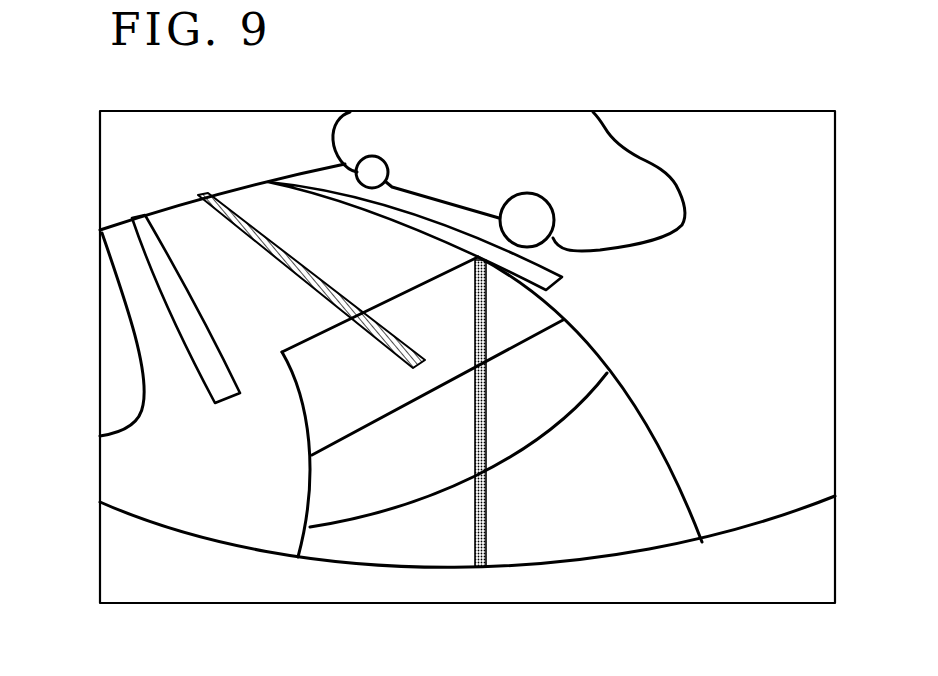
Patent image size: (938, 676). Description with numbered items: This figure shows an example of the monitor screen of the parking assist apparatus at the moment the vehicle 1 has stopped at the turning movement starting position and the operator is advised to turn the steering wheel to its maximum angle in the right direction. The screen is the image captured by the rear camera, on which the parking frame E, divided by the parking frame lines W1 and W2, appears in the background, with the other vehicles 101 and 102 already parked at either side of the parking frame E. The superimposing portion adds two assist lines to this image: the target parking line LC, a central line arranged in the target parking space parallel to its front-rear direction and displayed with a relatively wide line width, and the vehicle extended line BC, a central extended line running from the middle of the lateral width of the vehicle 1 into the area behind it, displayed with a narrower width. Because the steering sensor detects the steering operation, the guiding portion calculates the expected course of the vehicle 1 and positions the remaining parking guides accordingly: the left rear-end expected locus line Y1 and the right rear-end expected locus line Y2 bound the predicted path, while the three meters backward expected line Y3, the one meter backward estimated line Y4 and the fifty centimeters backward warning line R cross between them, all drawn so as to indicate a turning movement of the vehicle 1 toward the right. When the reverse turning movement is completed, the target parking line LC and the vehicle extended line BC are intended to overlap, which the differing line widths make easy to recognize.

The parking frame E is at (180, 228).
The target parking line LC is at (230, 203).
The parking frame line W1 is at (387, 205).
The parking frame line W2 is at (208, 347).
The left rear-end expected locus line Y1 is at (603, 357).
The right rear-end expected locus line Y2 is at (310, 440).
The 3 meters backward expected line Y3 is at (397, 296).
The 1 meter backward estimated line Y4 is at (432, 392).
The 50 centimeters backward warning line R is at (550, 437).
The vehicle extended line BC is at (486, 502).
The other vehicle 101 is at (653, 177).
The other vehicle 102 is at (110, 372).
The vehicle 1 is at (613, 587).